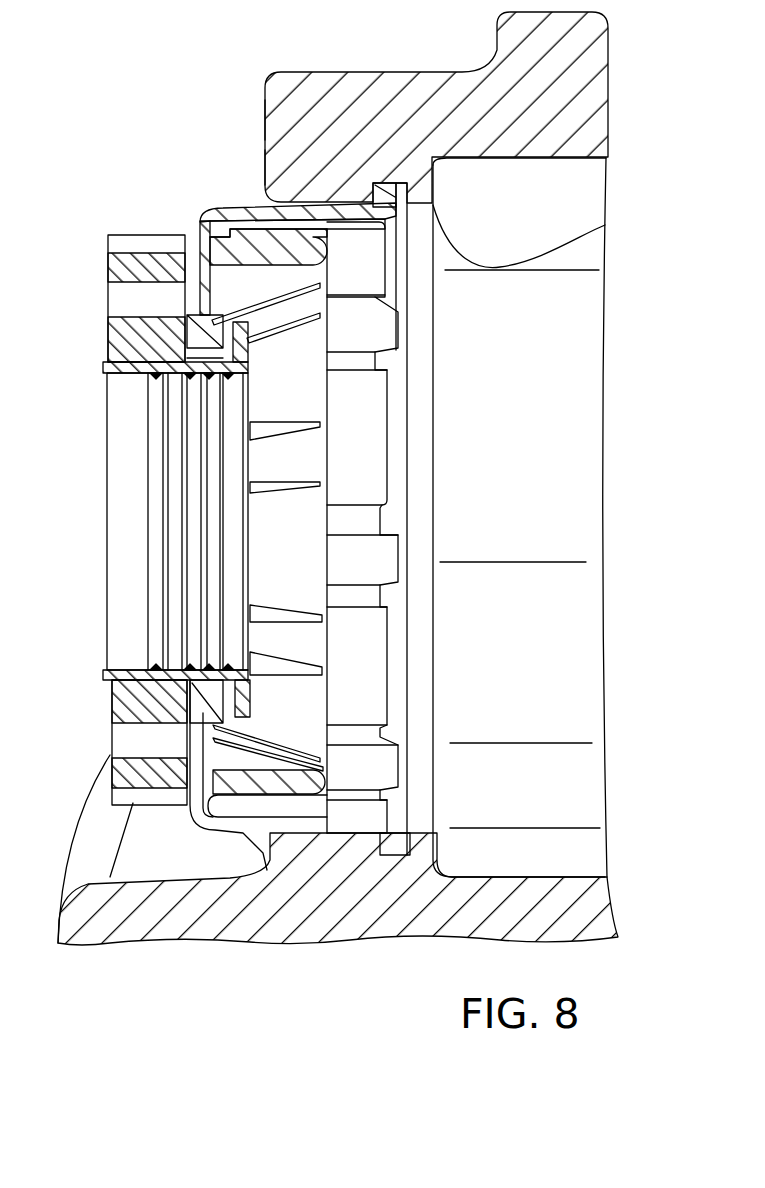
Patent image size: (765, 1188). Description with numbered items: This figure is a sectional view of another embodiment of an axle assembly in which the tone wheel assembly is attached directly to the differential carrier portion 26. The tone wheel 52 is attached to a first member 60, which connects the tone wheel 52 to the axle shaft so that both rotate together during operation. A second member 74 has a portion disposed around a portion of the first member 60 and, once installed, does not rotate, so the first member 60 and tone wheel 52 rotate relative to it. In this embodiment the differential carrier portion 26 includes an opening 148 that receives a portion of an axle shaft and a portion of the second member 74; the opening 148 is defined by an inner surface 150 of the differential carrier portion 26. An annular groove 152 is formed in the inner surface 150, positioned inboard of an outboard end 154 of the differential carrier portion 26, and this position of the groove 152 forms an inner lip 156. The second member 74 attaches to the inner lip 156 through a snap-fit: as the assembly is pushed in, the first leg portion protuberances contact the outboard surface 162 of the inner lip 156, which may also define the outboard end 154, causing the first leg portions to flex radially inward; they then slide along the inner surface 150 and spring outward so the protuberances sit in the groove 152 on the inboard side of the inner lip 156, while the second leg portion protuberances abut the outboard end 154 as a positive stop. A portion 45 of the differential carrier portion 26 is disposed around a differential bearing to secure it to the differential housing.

The differential carrier portion 26 is at (627, 350).
The portion of the differential carrier portion 45 is at (595, 95).
The tone wheel 52 is at (115, 245).
The first member 60 is at (115, 480).
The second member 74 is at (290, 710).
The opening 148 is at (548, 508).
The inner surface 150 is at (515, 270).
The groove 152 is at (393, 190).
The outboard end 154 is at (264, 138).
The inner lip 156 is at (313, 840).
The outboard surface 162 is at (264, 168).